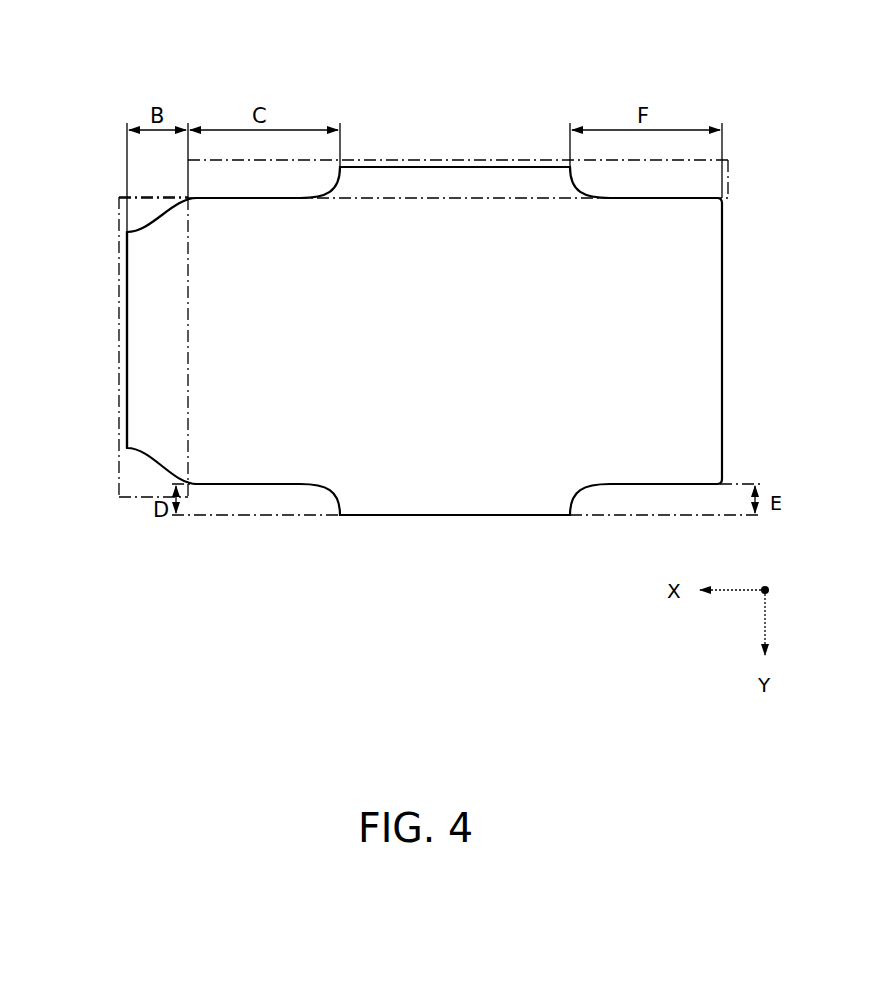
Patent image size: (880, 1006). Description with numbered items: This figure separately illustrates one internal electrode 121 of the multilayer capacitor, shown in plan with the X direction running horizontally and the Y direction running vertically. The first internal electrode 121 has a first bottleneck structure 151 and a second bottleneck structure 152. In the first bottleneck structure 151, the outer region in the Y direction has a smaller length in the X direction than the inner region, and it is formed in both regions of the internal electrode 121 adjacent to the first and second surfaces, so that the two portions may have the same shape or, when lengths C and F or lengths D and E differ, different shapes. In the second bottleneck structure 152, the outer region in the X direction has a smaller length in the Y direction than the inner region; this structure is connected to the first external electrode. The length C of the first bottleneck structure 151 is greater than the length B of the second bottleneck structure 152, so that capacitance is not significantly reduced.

The first internal electrode 121 is at (494, 110).
The first bottleneck structure 151 is at (378, 160).
The second bottleneck structure 152 is at (118, 372).